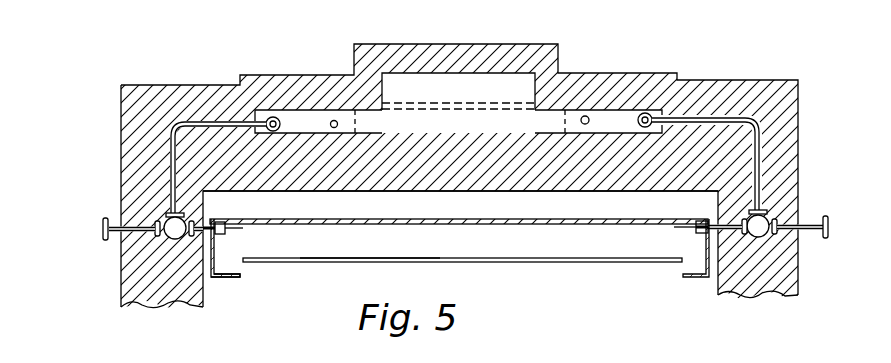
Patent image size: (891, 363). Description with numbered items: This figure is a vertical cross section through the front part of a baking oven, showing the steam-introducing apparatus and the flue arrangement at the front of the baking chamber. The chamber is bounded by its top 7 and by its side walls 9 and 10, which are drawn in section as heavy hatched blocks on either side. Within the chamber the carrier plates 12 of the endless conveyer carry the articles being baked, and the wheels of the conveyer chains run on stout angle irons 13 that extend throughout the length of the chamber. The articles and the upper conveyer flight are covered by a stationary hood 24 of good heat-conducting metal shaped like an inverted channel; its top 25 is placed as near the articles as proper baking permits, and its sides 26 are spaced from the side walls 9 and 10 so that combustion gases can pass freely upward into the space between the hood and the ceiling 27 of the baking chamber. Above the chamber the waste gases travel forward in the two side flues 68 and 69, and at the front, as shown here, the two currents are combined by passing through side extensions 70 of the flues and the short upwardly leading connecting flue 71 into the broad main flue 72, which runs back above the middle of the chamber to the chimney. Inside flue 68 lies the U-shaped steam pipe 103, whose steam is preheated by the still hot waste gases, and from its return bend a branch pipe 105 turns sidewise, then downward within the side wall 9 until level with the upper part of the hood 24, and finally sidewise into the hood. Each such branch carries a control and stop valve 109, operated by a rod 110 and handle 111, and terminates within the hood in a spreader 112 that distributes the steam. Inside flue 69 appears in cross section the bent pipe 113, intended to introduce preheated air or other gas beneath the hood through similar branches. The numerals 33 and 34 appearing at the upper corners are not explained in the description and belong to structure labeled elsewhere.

The top 7 is at (410, 44).
The side wall 9 is at (162, 291).
The side wall 10 is at (758, 281).
The plate 12 is at (375, 257).
The angle iron 13 is at (230, 280).
The hood 24 is at (462, 246).
The top of the hood 25 is at (326, 222).
The sides of the hood 26 is at (216, 248).
The ceiling 27 is at (486, 191).
The flue 68 is at (297, 110).
The flue 69 is at (650, 110).
The side extension 70 is at (604, 74).
The connecting flue 71 is at (555, 118).
The main flue 72 is at (480, 85).
The pipe 103 is at (330, 124).
The branch pipe 105 is at (170, 162).
The control and stop valve 109 is at (790, 203).
The rod 110 is at (811, 222).
The handle 111 is at (830, 219).
The spreader 112 is at (700, 232).
The bent pipe 113 is at (637, 120).
The partial numeral from adjacent figure 33 is at (17, 10).
The partial numeral from adjacent figure 34 is at (867, 10).